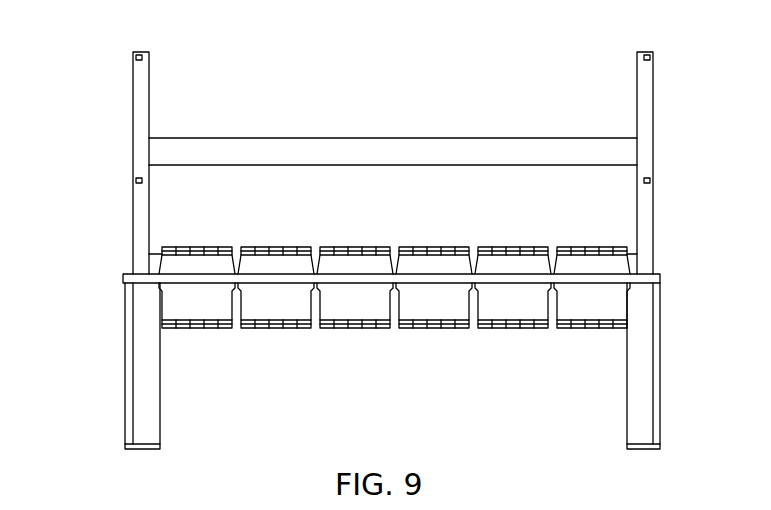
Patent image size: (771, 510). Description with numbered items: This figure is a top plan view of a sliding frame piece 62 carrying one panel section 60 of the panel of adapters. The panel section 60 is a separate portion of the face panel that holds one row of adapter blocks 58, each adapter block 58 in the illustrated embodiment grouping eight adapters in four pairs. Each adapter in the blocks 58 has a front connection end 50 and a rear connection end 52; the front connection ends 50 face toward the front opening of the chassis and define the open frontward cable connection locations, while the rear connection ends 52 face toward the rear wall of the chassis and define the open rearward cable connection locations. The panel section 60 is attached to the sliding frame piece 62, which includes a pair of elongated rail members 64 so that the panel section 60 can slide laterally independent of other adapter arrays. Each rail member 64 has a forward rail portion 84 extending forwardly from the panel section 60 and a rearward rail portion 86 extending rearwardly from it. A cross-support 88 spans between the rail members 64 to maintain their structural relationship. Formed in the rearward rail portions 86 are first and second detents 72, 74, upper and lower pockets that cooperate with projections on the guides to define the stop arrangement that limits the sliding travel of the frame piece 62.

The front connection end 50 is at (280, 328).
The rear connection end 52 is at (249, 248).
The adapter block 58 is at (423, 258).
The panel section 60 is at (653, 277).
The sliding frame piece 62 is at (108, 247).
The elongated rail member 64 is at (143, 337).
The first detent 72 is at (133, 180).
The second detent 74 is at (135, 55).
The forward rail portion 84 is at (147, 420).
The rearward rail portion 86 is at (138, 142).
The cross-support 88 is at (387, 153).